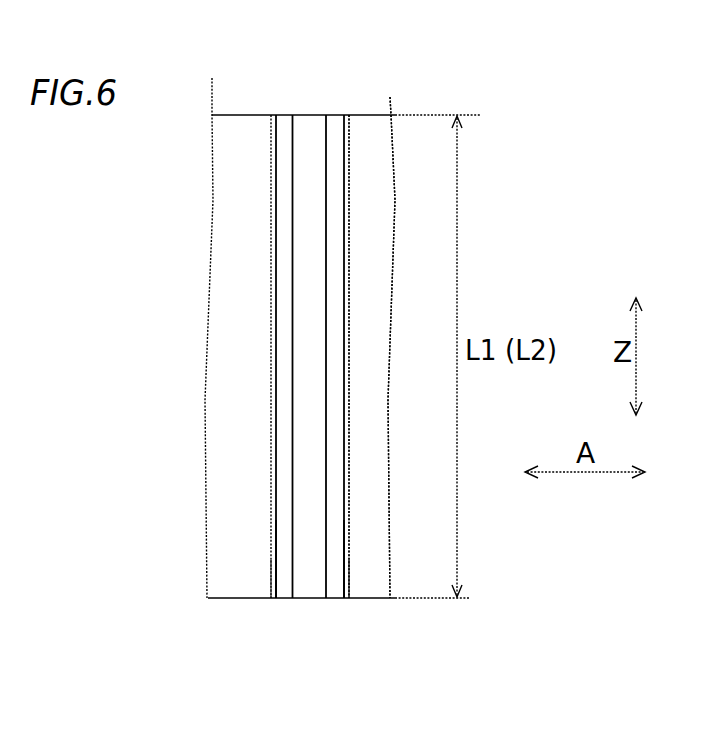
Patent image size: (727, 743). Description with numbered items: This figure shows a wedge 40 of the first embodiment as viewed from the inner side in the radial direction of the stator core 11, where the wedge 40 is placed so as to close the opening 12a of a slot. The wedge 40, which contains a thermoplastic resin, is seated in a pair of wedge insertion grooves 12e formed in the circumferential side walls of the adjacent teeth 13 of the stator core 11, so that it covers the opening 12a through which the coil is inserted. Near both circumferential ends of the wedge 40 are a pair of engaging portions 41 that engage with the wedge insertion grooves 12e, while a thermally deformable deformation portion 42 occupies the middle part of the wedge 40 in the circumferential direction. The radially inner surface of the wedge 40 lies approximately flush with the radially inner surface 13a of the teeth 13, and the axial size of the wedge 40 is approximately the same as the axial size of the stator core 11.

The wedge 40 is at (290, 80).
The stator core 11 is at (377, 183).
The tooth 13 is at (238, 121).
The radially inner surface 13a is at (430, 312).
The engaging portion 41 is at (273, 147).
The deformation portion 42 is at (302, 143).
The wedge insertion groove 12e is at (282, 523).
The opening 12a is at (275, 565).